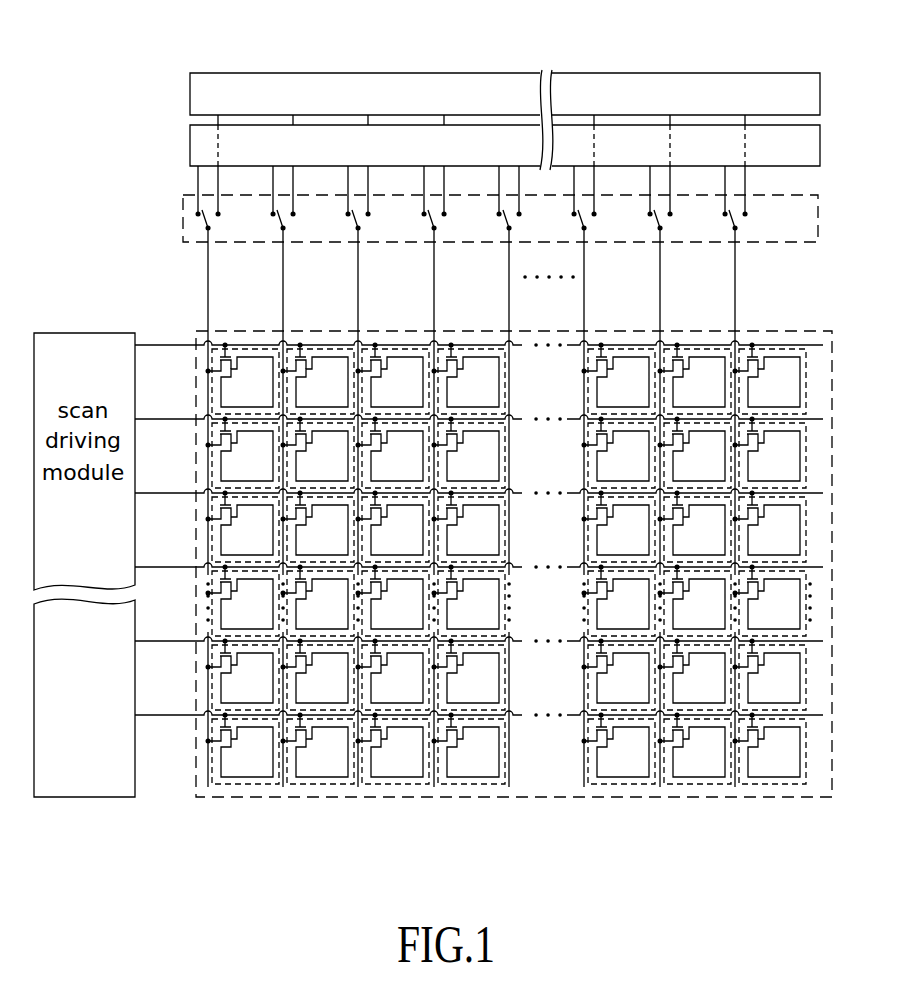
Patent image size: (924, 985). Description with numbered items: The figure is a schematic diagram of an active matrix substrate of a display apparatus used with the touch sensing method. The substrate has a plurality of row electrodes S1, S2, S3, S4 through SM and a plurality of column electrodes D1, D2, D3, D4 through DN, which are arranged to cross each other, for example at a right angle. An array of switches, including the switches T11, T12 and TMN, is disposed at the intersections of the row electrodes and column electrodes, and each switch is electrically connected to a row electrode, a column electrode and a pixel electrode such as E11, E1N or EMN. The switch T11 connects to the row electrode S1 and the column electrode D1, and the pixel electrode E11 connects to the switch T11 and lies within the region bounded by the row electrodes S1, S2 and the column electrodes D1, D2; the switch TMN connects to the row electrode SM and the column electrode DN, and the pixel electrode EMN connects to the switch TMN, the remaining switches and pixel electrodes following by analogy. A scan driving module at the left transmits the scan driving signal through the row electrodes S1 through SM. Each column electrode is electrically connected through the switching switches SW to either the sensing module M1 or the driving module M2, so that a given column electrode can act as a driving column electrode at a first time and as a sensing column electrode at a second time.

The sensing module M1 is at (222, 73).
The driving module M2 is at (190, 148).
The switching switches SW is at (183, 213).
The column electrode D1 is at (223, 507).
The column electrode D2 is at (298, 507).
The column electrode D3 is at (374, 507).
The column electrode D4 is at (449, 507).
The column electrode DN is at (751, 507).
The row electrode S1 is at (479, 329).
The row electrode S2 is at (479, 403).
The row electrode S3 is at (479, 477).
The row electrode S4 is at (479, 550).
The row electrode SM is at (479, 700).
The pixel electrode E11 is at (255, 350).
The switch T11 is at (222, 357).
The switch T12 is at (315, 350).
The pixel electrode E1N is at (790, 362).
The switch TMN is at (750, 742).
The pixel electrode EMN is at (787, 768).